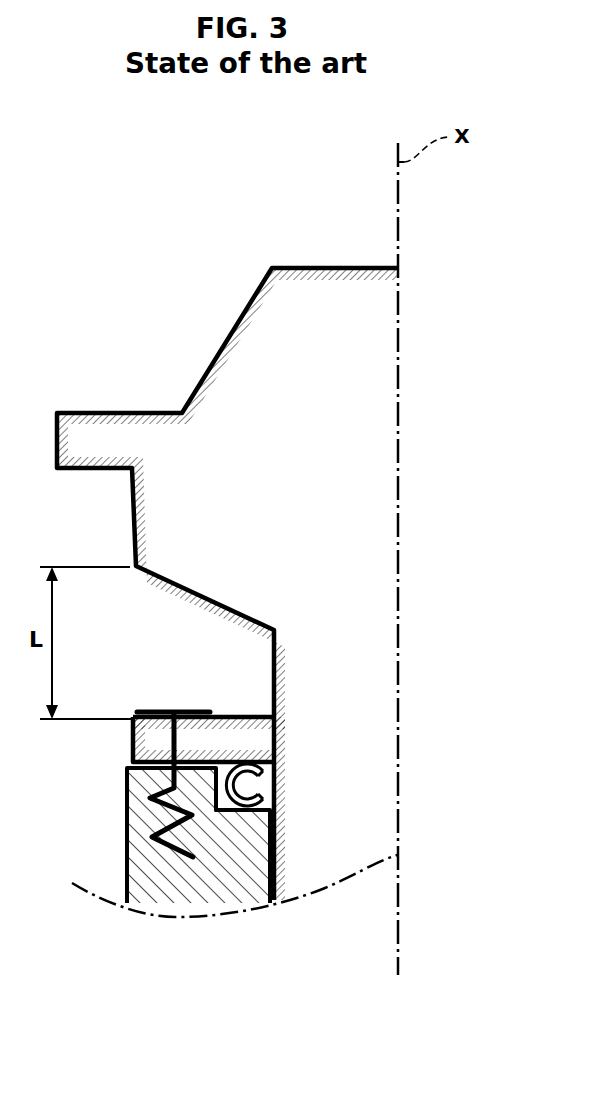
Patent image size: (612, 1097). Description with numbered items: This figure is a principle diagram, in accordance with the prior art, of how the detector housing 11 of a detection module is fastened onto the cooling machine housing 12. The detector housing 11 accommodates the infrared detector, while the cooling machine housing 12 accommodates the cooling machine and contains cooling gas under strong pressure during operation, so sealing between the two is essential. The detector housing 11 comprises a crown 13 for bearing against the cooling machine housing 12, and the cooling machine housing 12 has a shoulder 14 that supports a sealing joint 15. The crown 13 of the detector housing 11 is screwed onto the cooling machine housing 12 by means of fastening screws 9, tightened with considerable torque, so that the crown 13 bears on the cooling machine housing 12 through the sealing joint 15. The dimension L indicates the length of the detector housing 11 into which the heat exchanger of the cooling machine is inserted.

The fastening screw 9 is at (158, 710).
The detector housing 11 is at (273, 675).
The cooling machine housing 12 is at (127, 870).
The crown 13 is at (232, 717).
The shoulder 14 is at (256, 802).
The sealing joint 15 is at (262, 790).